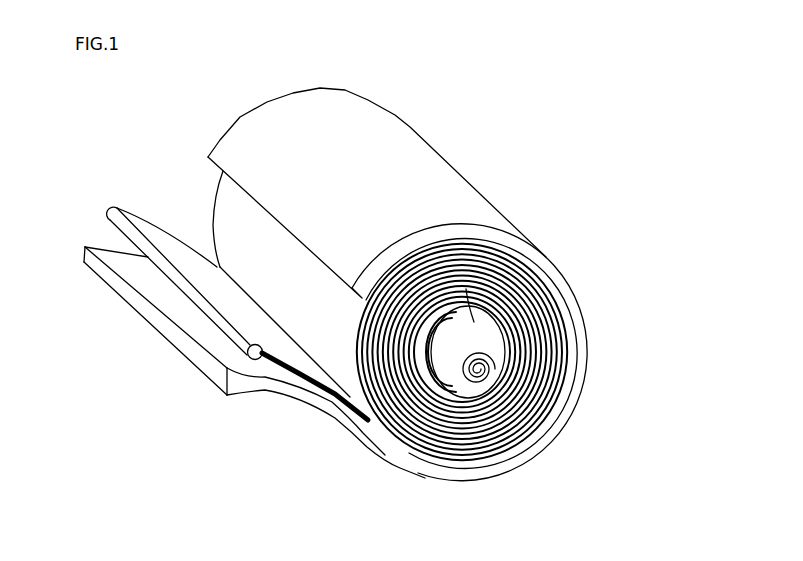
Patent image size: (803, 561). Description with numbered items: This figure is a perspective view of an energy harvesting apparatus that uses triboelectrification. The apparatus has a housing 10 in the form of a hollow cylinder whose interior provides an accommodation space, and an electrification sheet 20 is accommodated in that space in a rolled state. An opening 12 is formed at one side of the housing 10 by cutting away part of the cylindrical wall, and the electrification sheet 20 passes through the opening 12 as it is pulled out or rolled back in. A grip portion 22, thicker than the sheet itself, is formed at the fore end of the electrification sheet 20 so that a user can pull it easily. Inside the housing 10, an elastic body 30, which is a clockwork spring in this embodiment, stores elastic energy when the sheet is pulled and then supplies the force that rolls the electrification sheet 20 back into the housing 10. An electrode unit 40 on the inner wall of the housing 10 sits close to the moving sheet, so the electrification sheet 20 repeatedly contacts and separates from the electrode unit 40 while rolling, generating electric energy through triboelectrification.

The housing 10 is at (436, 231).
The opening 12 is at (253, 255).
The electrification sheet 20 is at (533, 273).
The grip portion 22 is at (177, 281).
The elastic body 30 is at (528, 396).
The electrode unit 40 is at (200, 330).